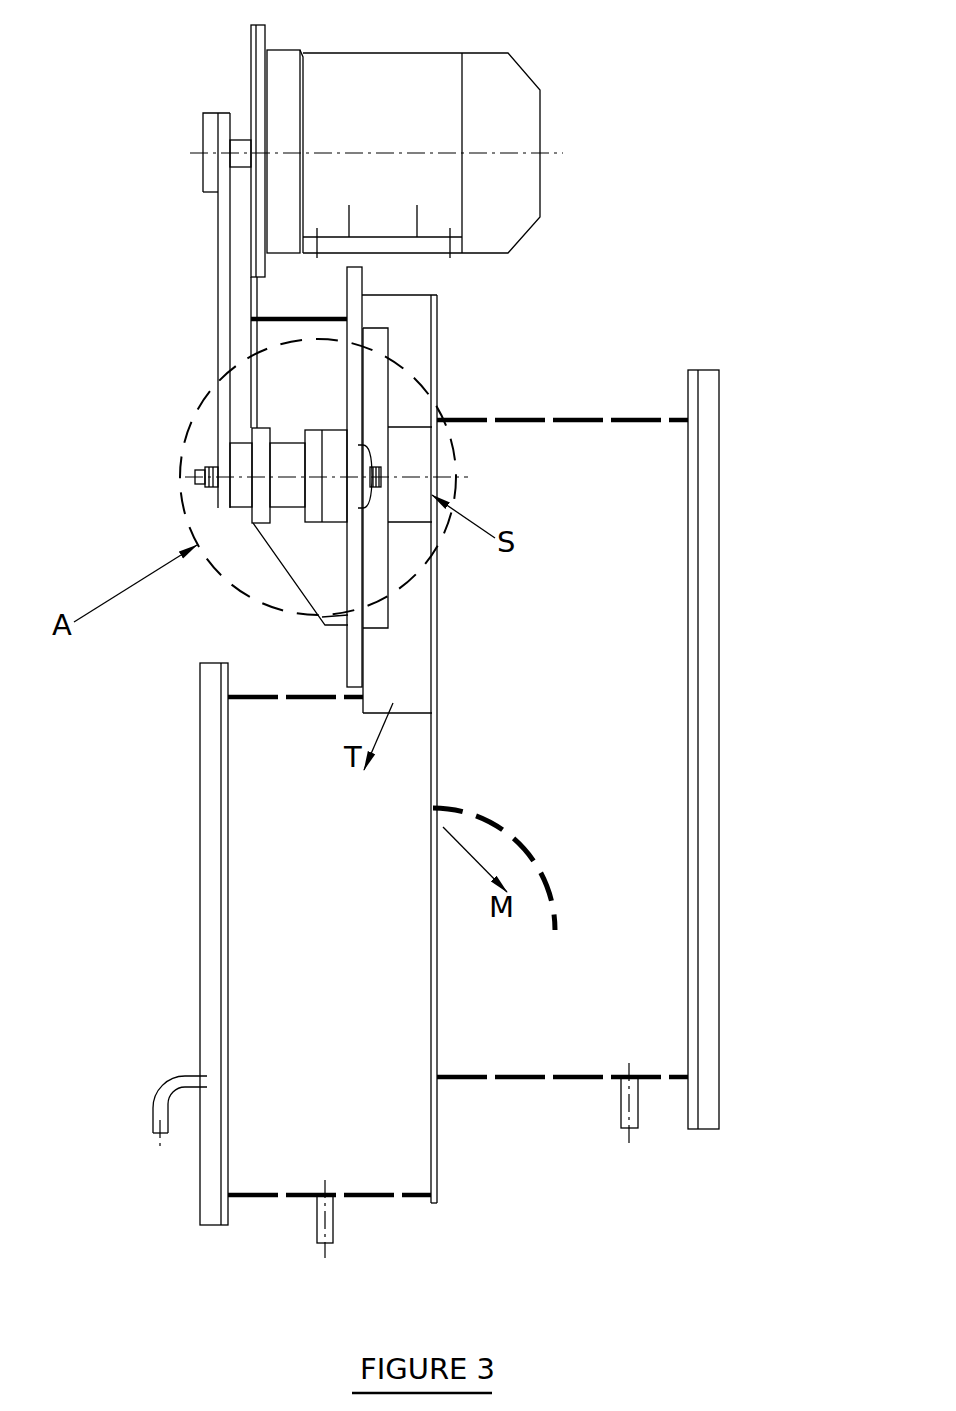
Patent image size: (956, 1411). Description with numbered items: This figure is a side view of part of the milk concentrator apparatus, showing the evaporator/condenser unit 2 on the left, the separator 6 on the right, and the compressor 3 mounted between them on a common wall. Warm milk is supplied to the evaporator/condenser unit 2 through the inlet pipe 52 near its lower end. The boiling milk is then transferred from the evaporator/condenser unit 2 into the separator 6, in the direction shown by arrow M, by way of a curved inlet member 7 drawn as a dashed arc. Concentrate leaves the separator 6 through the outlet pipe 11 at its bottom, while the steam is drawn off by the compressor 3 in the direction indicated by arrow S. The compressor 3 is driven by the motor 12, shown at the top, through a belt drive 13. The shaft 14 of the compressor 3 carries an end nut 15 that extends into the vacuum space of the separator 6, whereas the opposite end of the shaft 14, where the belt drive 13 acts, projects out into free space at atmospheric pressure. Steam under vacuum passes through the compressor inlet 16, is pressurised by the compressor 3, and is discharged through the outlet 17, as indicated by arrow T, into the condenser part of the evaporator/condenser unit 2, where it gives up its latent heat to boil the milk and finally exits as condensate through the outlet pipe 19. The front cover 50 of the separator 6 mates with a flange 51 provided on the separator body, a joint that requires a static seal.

The motor 12 is at (384, 143).
The belt drive 13 is at (218, 283).
The compressor 3 is at (388, 562).
The shaft 14 is at (199, 478).
The end nut 15 is at (371, 470).
The compressor inlet 16 is at (432, 467).
The outlet 17 is at (405, 694).
The separator 6 is at (605, 675).
The front cover 50 is at (719, 492).
The flange 51 is at (698, 550).
The curved inlet member 7 is at (496, 817).
The evaporator/condenser unit 2 is at (281, 944).
The outlet pipe 19 is at (316, 1232).
The outlet pipe 11 is at (621, 1118).
The inlet pipe 52 is at (153, 1120).